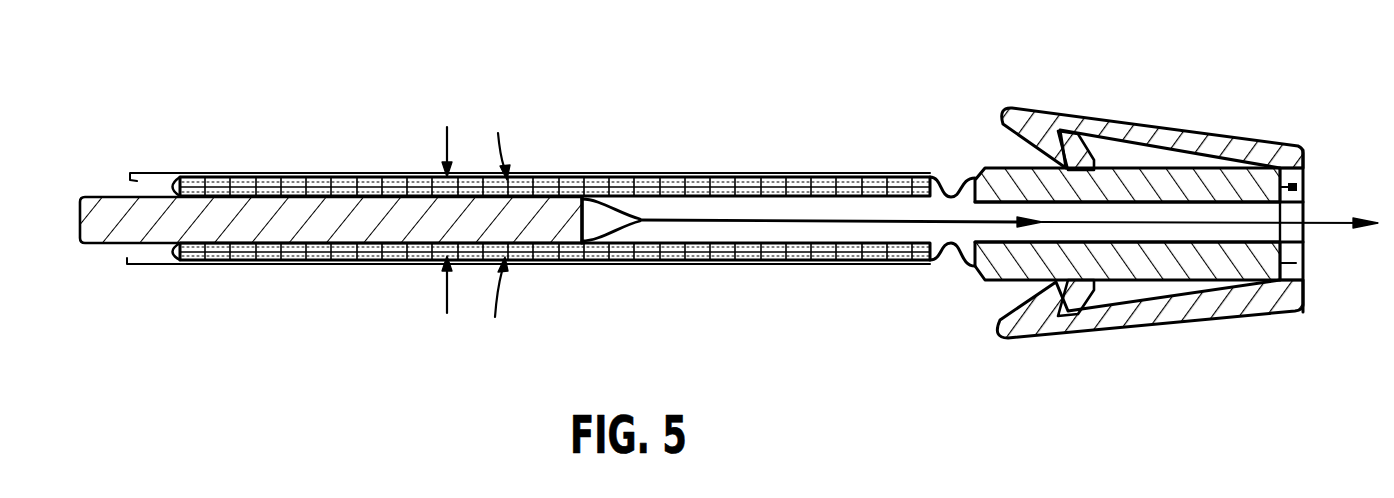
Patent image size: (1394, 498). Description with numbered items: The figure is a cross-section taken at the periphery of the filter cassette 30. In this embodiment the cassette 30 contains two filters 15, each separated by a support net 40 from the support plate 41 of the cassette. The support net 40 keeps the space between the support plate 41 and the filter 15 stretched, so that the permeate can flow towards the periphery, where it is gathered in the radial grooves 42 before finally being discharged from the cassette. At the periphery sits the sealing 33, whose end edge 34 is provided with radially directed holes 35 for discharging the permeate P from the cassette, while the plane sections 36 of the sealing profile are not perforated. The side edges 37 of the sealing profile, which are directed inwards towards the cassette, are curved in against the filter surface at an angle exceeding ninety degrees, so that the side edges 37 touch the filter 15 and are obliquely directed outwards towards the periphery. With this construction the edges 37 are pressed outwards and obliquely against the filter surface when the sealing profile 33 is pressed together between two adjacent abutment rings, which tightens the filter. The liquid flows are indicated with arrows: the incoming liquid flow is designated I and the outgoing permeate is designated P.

The filter 15 is at (219, 268).
The cassette 30 is at (300, 297).
The sealing 33 is at (1250, 138).
The end edge 34 is at (1305, 141).
The radially directed holes 35 is at (1290, 243).
The plane sections 36 is at (1148, 133).
The side edges 37 is at (1093, 127).
The support net 40 is at (317, 253).
The support plate 41 is at (372, 217).
The radial grooves 42 is at (645, 232).
The outgoing permeate P is at (1323, 224).
The incoming liquid flow I is at (465, 344).